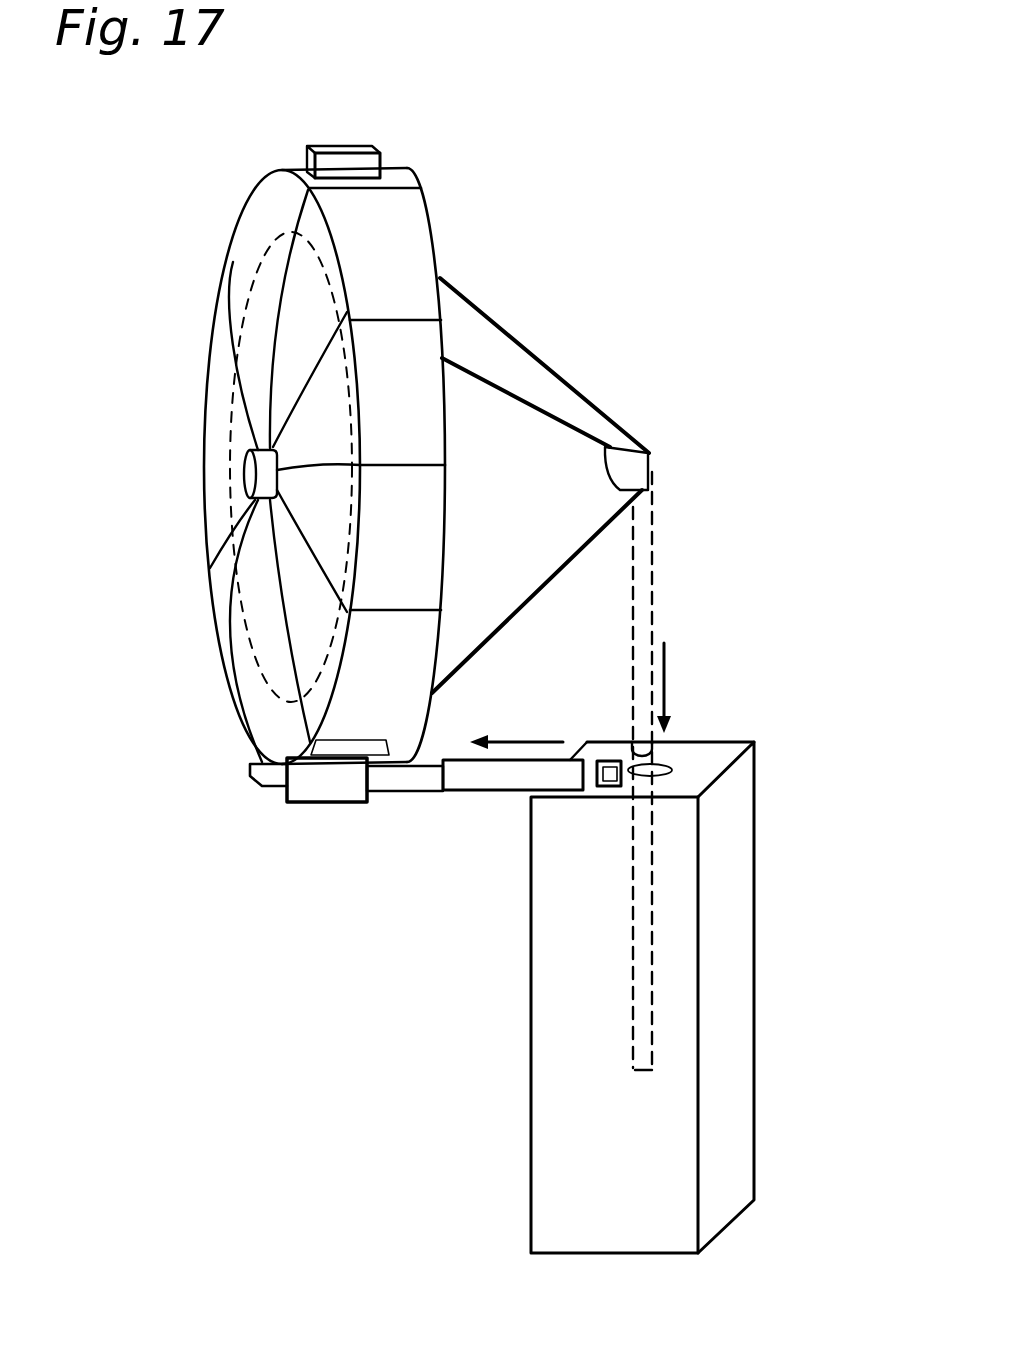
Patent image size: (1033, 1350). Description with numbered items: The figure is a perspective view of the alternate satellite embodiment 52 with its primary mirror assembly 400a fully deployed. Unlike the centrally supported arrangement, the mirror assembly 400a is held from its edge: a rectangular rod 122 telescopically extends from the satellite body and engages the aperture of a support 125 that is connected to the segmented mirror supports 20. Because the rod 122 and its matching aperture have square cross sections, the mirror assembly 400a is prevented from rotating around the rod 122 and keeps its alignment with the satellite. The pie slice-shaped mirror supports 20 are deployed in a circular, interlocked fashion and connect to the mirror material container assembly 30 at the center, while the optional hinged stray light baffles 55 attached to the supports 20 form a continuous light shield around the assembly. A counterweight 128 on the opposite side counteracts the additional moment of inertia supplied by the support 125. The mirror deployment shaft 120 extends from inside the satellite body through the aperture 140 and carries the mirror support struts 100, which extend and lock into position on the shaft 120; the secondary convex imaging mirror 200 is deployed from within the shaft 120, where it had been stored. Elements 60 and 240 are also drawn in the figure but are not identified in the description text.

The mirror assembly 400a is at (222, 193).
The segmented mirror supports 20 is at (170, 640).
The hinged stray light baffles 55 is at (377, 453).
The mirror material container assembly 30 is at (248, 472).
The counterweight 128 is at (362, 172).
The mirror support struts 100 is at (528, 357).
The secondary convex imaging mirror 200 is at (650, 450).
The mirror deployment shaft 120 is at (643, 607).
The aperture 140 is at (672, 752).
The bottom plate 60 is at (237, 745).
The support 125 is at (317, 778).
The rectangular rod 122 is at (480, 782).
The arm coupling 240 is at (603, 778).
The alternate satellite embodiment 52 is at (270, 1090).